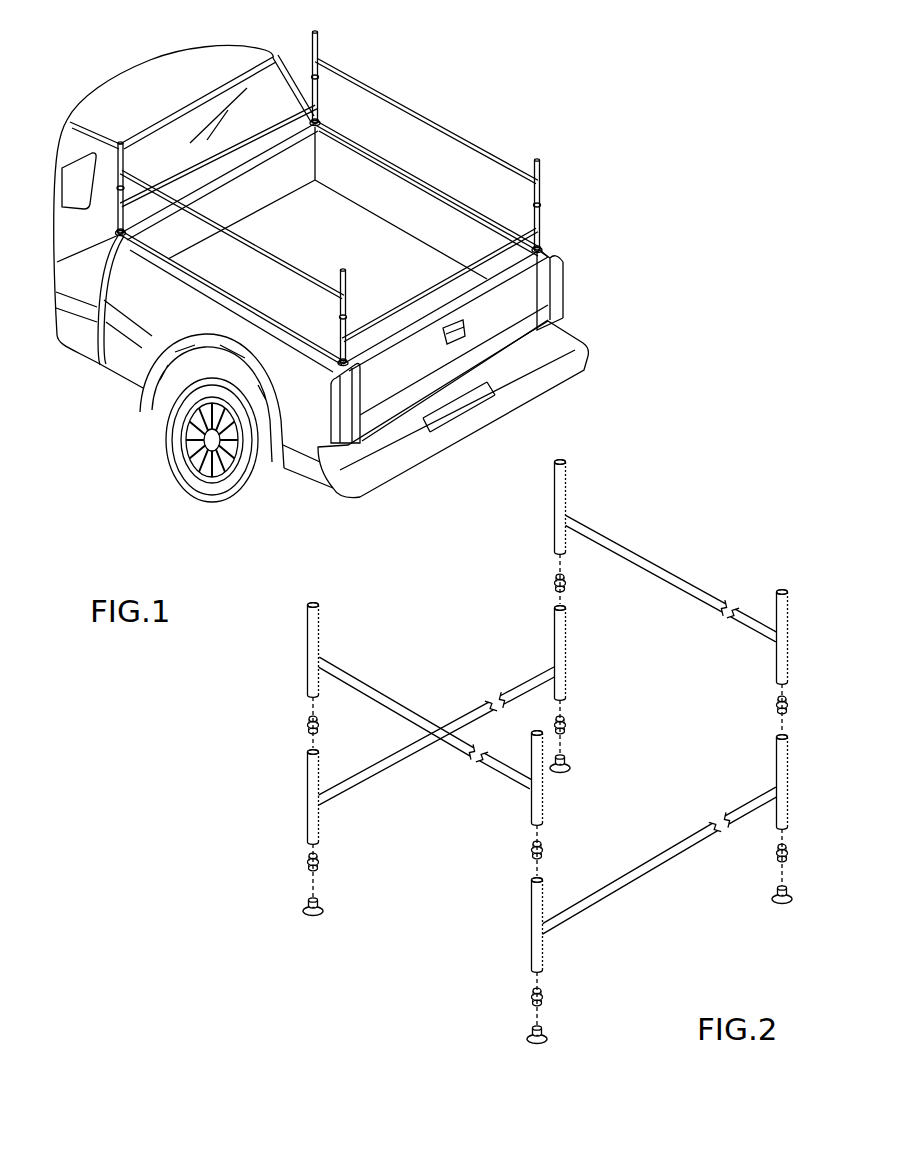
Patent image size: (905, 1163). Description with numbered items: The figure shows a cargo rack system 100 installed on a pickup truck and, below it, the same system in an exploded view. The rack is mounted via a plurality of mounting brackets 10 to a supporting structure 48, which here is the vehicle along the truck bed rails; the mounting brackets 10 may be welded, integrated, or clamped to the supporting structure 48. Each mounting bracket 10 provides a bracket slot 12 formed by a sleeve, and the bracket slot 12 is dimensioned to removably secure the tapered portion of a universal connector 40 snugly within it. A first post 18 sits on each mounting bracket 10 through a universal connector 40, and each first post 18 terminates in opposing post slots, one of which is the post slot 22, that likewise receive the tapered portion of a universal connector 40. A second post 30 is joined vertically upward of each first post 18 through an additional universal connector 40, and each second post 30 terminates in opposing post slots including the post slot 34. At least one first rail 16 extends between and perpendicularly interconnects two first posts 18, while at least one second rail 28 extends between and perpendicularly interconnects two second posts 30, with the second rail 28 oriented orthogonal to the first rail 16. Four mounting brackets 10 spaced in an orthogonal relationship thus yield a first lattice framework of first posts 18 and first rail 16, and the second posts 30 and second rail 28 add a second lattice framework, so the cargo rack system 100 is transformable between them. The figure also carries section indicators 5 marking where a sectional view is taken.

In FIG. 1, the cargo rack system 100 is at (572, 63).
In FIG. 1, the mounting bracket 10 is at (541, 263).
In FIG. 2, the mounting bracket 10 is at (313, 918).
In FIG. 2, the bracket slot 12 is at (318, 902).
In FIG. 1, the first rail 16 is at (493, 255).
In FIG. 2, the first rail 16 is at (652, 873).
In FIG. 1, the first post 18 is at (318, 97).
In FIG. 2, the first post 18 is at (318, 833).
In FIG. 2, the post slot 22 is at (308, 755).
In FIG. 1, the second rail 28 is at (442, 131).
In FIG. 2, the second rail 28 is at (690, 600).
In FIG. 1, the second post 30 is at (313, 57).
In FIG. 2, the second post 30 is at (308, 643).
In FIG. 1, the post slot 34 is at (318, 34).
In FIG. 2, the post slot 34 is at (318, 606).
In FIG. 1, the universal connector 40 is at (319, 78).
In FIG. 2, the universal connector 40 is at (318, 731).
In FIG. 1, the supporting structure 48 is at (414, 181).
In FIG. 1, the section view indicator 5 is at (420, 295).